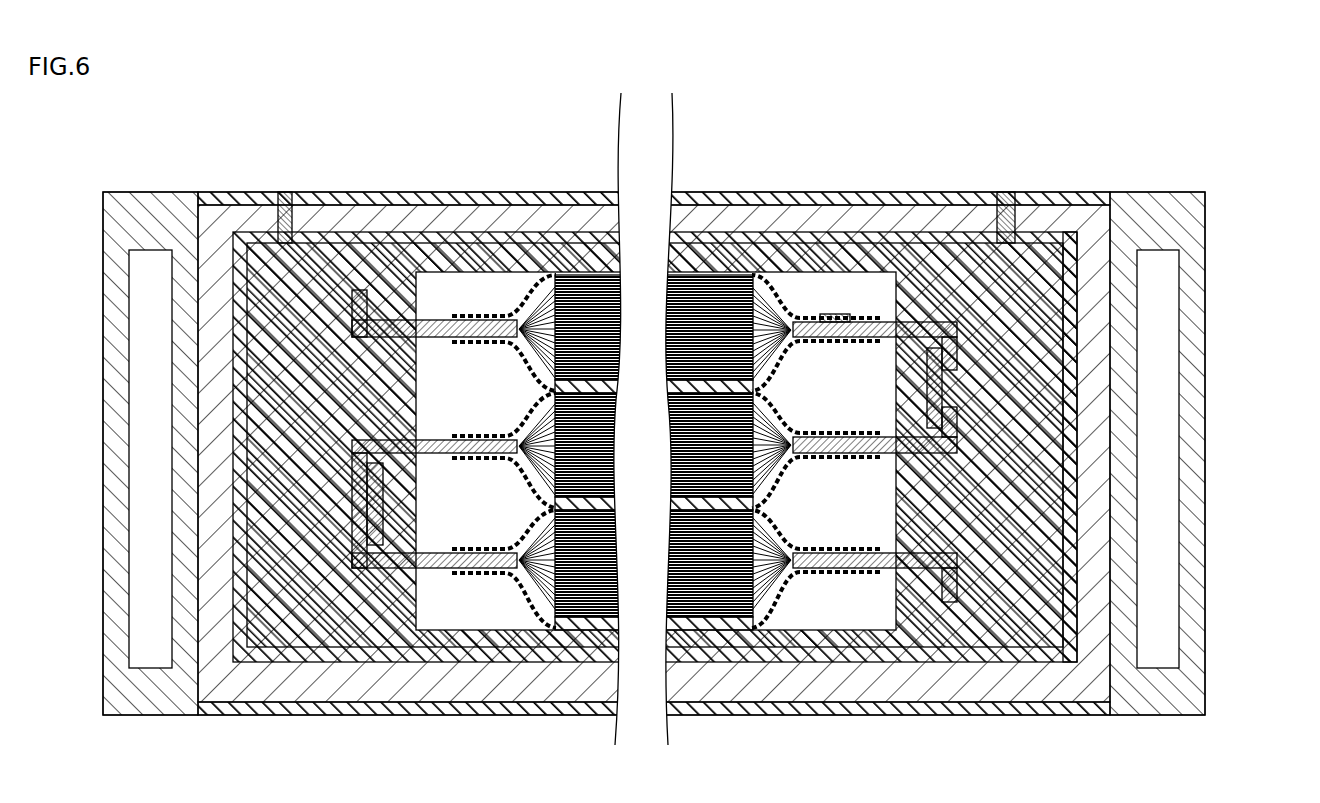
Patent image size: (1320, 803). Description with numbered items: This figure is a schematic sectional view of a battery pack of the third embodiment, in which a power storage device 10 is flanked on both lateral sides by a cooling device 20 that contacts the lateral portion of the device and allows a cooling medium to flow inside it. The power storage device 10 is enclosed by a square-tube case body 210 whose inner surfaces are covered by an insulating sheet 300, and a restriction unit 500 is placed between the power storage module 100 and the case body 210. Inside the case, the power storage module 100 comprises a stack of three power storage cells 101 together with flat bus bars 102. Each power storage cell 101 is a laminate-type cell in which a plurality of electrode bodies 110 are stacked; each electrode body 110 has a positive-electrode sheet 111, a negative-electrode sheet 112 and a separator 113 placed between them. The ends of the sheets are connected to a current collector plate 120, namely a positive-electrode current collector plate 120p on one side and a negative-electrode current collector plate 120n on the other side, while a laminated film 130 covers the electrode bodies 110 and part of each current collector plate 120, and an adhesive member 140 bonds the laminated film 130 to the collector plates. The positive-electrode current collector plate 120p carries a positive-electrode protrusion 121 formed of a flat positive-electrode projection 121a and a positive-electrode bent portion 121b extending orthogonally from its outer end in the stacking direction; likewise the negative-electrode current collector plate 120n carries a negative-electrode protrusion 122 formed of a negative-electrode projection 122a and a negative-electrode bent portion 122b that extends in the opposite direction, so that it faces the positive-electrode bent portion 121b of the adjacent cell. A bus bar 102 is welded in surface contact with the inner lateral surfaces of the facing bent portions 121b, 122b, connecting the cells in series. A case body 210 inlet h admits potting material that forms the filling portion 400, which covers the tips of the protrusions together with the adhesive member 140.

The power storage device 10 is at (316, 208).
The cooling device 20 is at (140, 192).
The inlet h is at (285, 215).
The power storage module 100 is at (516, 280).
The power storage cell 101 is at (850, 120).
The bus bar 102 is at (940, 395).
The electrode body 110 is at (713, 295).
The positive-electrode sheet 111 is at (681, 612).
The negative-electrode sheet 112 is at (718, 605).
The separator 113 is at (745, 615).
The current collector plate 120 is at (795, 300).
The positive-electrode current collector plate 120p is at (470, 314).
The negative-electrode current collector plate 120n is at (838, 568).
The positive-electrode protrusion 121 is at (810, 444).
The positive-electrode projection 121a is at (405, 322).
The positive-electrode bent portion 121b is at (360, 293).
The negative-electrode protrusion 122 is at (890, 442).
The negative-electrode projection 122a is at (886, 322).
The negative-electrode bent portion 122b is at (948, 330).
The laminated film 130 is at (766, 292).
The adhesive member 140 is at (832, 314).
The case body 210 is at (1072, 300).
The insulating sheet 300 is at (226, 200).
The filling portion 400 is at (1002, 215).
The restriction unit 500 is at (600, 200).